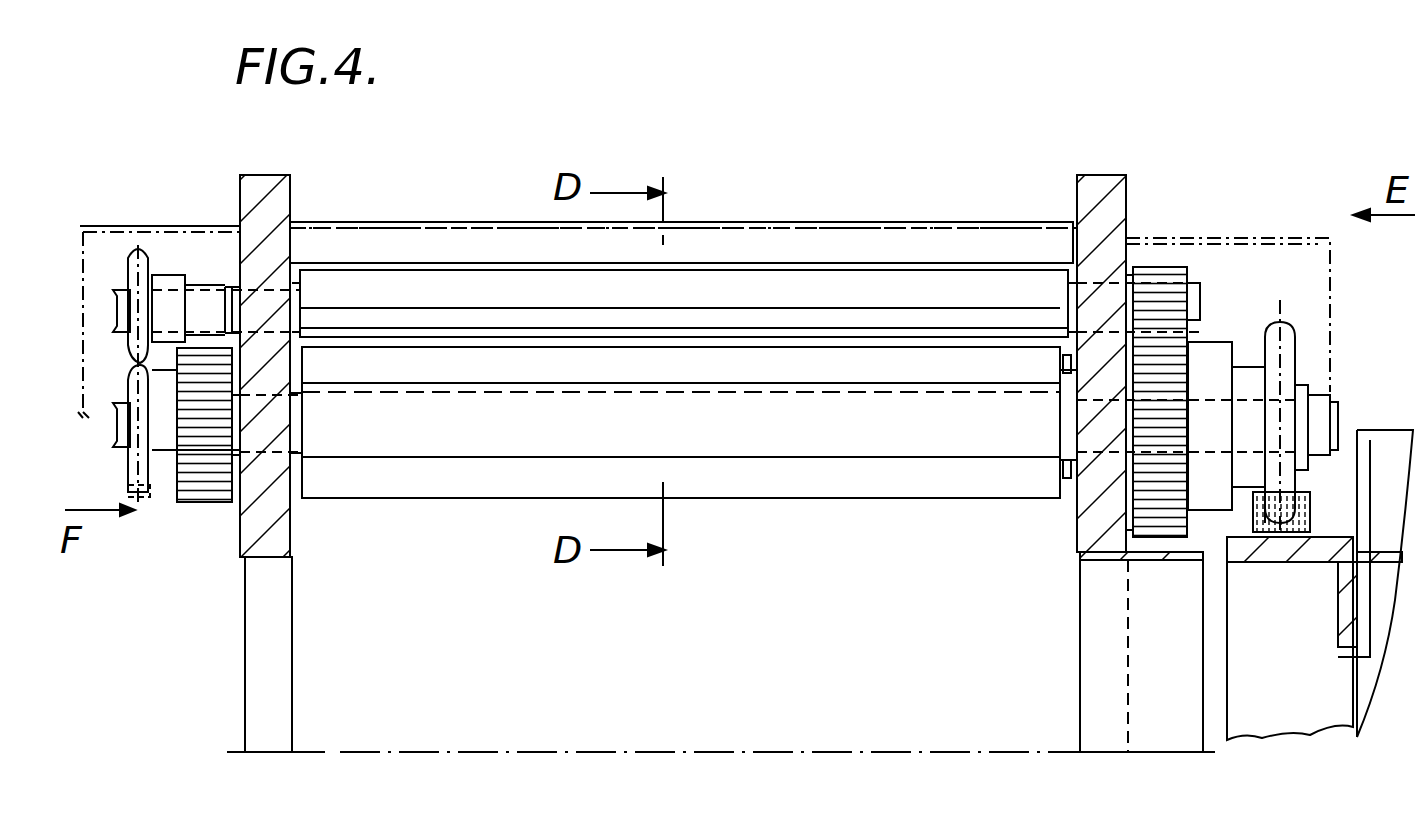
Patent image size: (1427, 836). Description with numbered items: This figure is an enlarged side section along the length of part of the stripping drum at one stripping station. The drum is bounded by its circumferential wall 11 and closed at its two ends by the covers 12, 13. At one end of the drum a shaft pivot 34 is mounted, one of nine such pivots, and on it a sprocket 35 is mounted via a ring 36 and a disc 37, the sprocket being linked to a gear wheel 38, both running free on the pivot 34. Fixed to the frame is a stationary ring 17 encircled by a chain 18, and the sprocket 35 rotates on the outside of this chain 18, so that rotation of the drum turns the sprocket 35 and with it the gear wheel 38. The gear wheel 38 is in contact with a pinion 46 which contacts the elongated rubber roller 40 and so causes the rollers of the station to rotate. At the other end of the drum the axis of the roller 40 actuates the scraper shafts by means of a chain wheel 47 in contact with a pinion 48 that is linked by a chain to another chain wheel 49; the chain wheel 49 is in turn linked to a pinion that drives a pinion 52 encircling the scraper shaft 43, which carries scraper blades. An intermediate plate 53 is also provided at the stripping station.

The circumferential wall 11 is at (272, 217).
The cover 12 is at (215, 228).
The cover 13 is at (1137, 240).
The stationary ring 17 is at (1250, 555).
The chain 18 is at (1312, 550).
The shaft pivot 34 is at (1330, 385).
The sprocket 35 is at (1290, 332).
The ring 36 is at (1312, 422).
The disc 37 is at (1305, 365).
The gear wheel 38 is at (1188, 362).
The rubber roller 40 is at (1205, 342).
The scraper shaft 43 is at (262, 445).
The pinion 46 is at (1165, 287).
The chain wheel 47 is at (130, 272).
The pinion 48 is at (140, 252).
The chain wheel 49 is at (140, 495).
The pinion 52 is at (203, 488).
The intermediate plate 53 is at (397, 228).